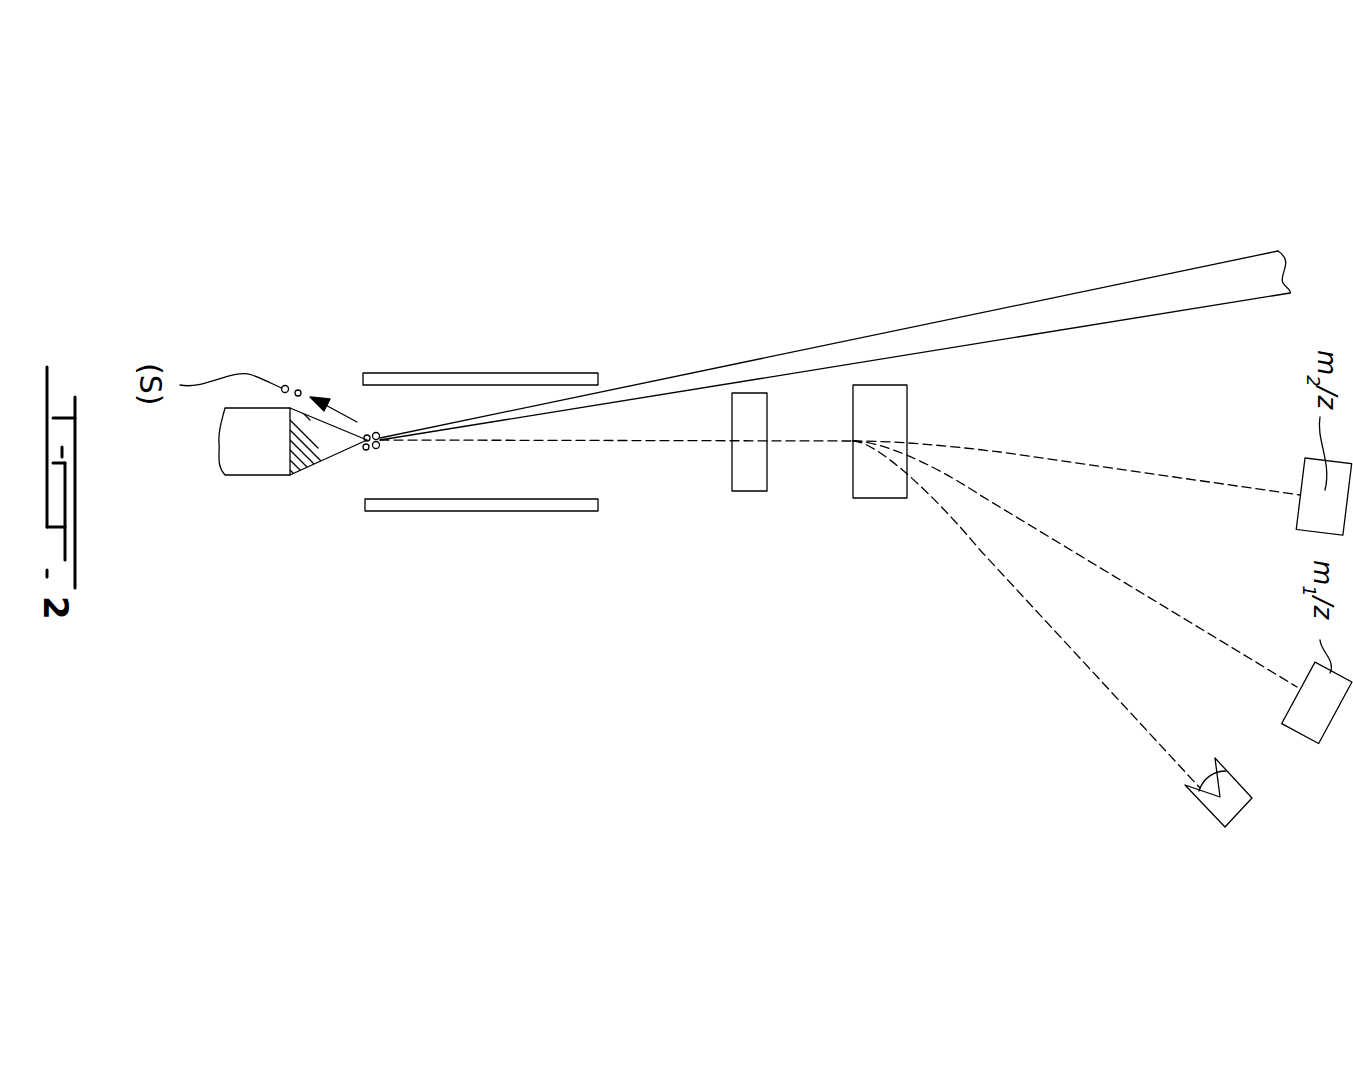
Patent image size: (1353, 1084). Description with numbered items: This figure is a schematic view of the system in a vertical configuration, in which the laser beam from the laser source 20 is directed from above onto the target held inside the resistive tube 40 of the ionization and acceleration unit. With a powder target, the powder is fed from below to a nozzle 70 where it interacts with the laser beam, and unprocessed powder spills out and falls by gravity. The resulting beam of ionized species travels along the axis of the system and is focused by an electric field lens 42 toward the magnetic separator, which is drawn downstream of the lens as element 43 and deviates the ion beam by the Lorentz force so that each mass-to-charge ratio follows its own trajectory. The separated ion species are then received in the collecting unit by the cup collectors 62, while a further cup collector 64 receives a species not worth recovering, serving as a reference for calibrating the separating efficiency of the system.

The laser source 20 is at (1198, 185).
The resistive tube 40 is at (450, 373).
The electric field lens 42 is at (737, 468).
The ion deflector 43 is at (853, 477).
The cup collectors 62 is at (1310, 678).
The cup collector 64 is at (1223, 817).
The nozzle 70 is at (323, 457).